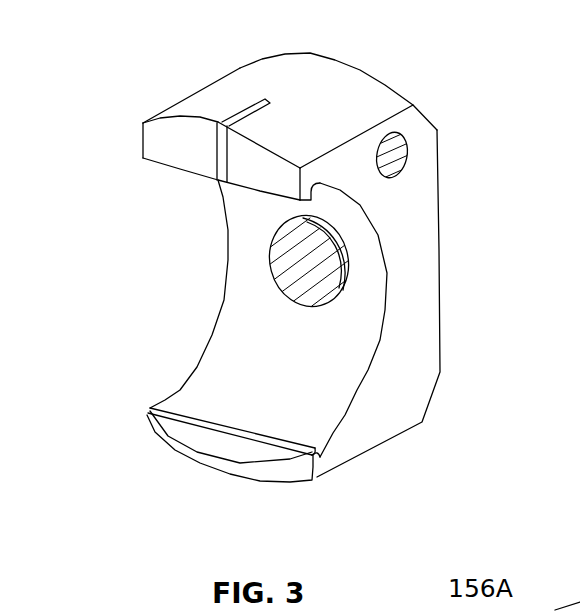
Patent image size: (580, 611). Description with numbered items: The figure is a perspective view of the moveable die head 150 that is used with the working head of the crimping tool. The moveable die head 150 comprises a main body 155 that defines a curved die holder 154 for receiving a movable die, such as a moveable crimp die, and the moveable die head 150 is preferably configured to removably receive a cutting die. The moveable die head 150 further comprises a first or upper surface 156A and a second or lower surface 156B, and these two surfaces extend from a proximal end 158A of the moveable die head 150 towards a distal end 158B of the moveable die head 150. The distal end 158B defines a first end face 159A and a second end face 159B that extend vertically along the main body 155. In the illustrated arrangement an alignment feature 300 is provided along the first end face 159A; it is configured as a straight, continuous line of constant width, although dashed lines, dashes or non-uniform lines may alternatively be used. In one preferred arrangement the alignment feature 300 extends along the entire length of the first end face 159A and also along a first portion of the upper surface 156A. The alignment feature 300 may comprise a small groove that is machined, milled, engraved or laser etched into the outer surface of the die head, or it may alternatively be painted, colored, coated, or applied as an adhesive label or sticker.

The moveable die head 150 is at (427, 80).
The curved die holder 154 is at (318, 382).
The main body 155 is at (413, 318).
The first or upper surface 156A is at (310, 78).
The second or lower surface 156B is at (310, 457).
The proximal end 158A is at (440, 242).
The distal end 158B is at (136, 346).
The first end face 159A is at (178, 142).
The second end face 159B is at (242, 455).
The alignment feature 300 is at (238, 112).